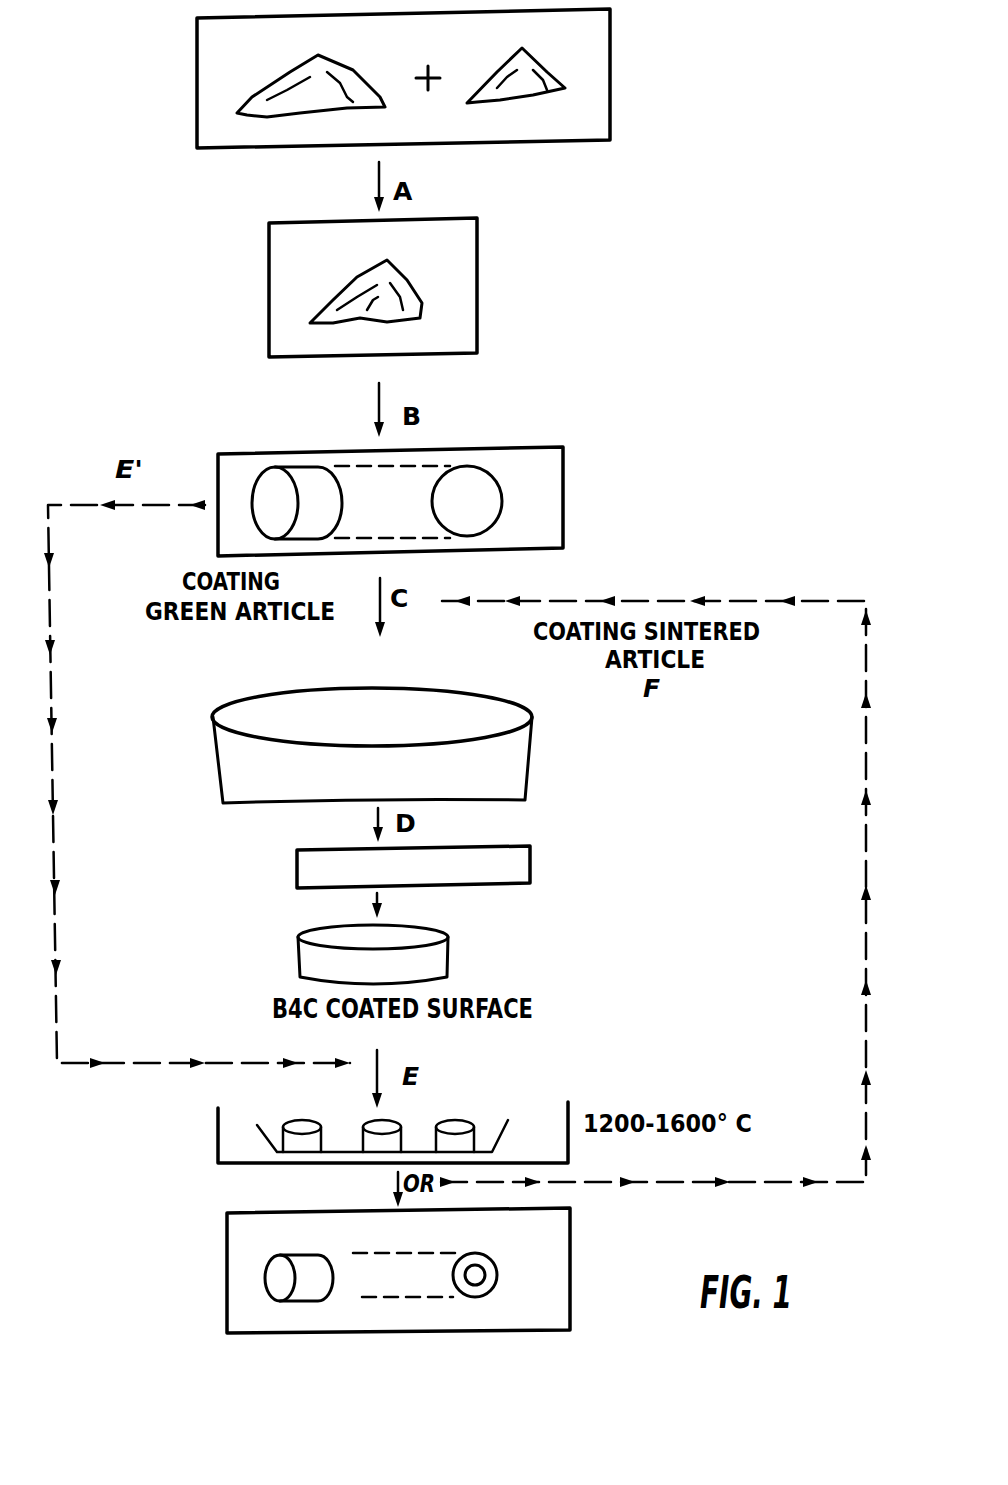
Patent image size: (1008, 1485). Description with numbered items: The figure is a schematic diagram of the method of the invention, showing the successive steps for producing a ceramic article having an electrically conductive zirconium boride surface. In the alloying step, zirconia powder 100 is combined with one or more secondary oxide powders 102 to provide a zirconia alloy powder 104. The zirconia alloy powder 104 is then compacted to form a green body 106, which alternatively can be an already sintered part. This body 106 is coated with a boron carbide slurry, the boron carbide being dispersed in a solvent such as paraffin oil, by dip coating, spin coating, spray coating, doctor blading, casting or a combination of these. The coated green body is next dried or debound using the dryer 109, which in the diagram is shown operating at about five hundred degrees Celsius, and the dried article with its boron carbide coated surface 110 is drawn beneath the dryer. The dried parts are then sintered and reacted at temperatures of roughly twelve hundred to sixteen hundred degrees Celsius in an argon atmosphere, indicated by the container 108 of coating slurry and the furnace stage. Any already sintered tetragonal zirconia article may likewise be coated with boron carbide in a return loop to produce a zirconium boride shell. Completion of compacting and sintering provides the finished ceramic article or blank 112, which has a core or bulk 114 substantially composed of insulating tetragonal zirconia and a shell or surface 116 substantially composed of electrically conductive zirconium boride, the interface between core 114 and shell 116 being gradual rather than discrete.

The zirconia powder 100 is at (248, 101).
The secondary oxide powders 102 is at (565, 88).
The zirconia alloy powder 104 is at (423, 303).
The green body 106 is at (563, 486).
The coating slurry container 108 is at (532, 770).
The dryer 109 is at (530, 866).
The B4C coated article 110 is at (448, 955).
The blank 112 is at (265, 1278).
The core 114 is at (490, 1287).
The shell 116 is at (494, 1263).